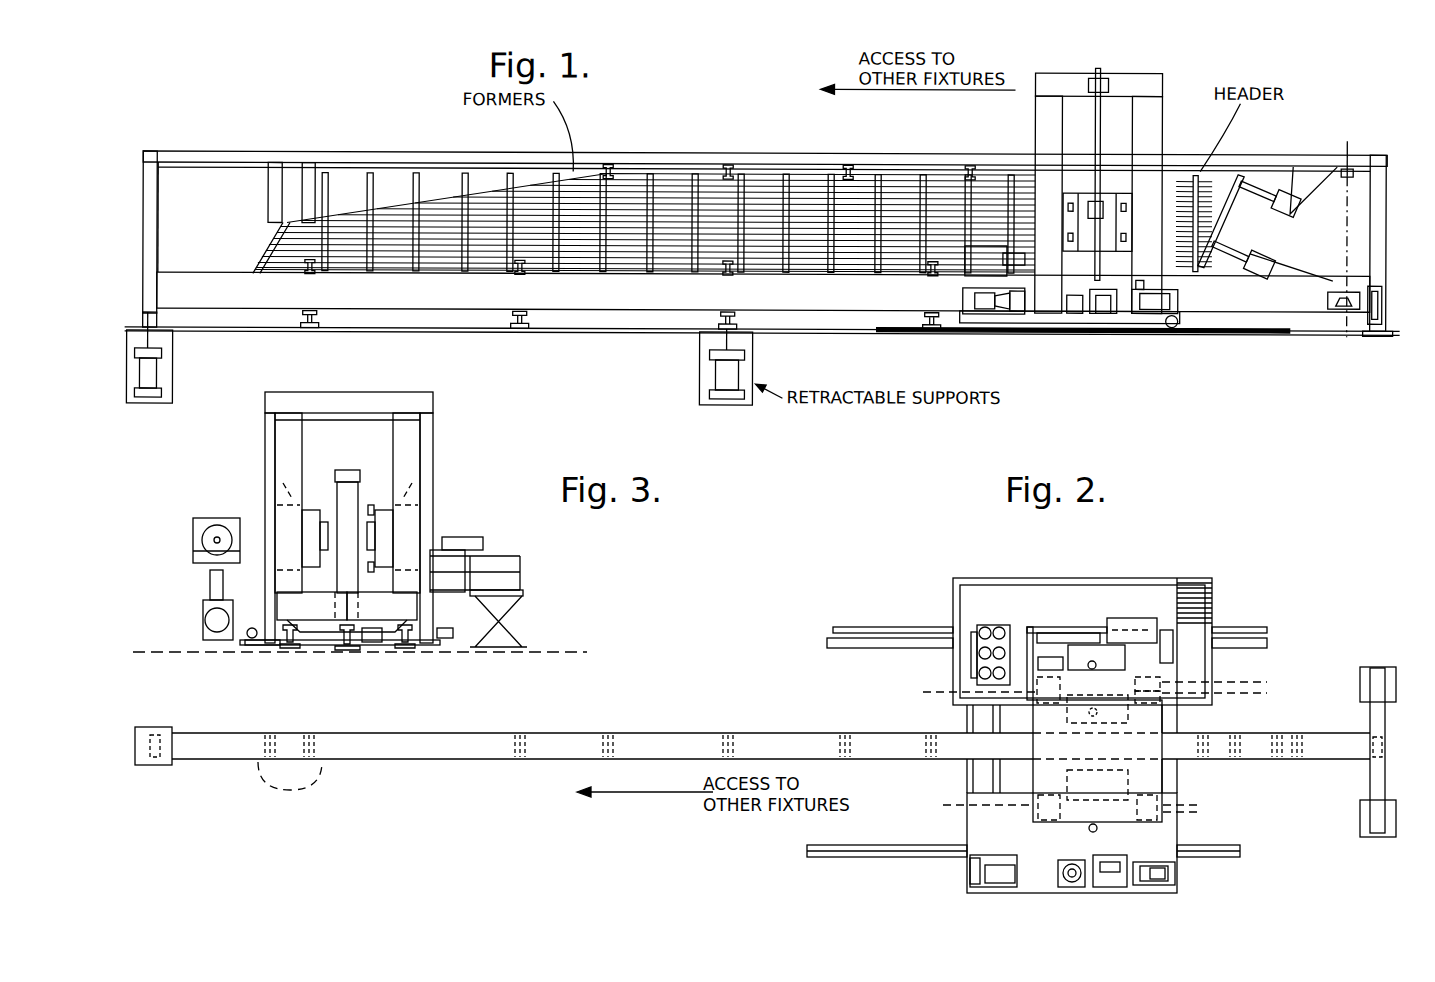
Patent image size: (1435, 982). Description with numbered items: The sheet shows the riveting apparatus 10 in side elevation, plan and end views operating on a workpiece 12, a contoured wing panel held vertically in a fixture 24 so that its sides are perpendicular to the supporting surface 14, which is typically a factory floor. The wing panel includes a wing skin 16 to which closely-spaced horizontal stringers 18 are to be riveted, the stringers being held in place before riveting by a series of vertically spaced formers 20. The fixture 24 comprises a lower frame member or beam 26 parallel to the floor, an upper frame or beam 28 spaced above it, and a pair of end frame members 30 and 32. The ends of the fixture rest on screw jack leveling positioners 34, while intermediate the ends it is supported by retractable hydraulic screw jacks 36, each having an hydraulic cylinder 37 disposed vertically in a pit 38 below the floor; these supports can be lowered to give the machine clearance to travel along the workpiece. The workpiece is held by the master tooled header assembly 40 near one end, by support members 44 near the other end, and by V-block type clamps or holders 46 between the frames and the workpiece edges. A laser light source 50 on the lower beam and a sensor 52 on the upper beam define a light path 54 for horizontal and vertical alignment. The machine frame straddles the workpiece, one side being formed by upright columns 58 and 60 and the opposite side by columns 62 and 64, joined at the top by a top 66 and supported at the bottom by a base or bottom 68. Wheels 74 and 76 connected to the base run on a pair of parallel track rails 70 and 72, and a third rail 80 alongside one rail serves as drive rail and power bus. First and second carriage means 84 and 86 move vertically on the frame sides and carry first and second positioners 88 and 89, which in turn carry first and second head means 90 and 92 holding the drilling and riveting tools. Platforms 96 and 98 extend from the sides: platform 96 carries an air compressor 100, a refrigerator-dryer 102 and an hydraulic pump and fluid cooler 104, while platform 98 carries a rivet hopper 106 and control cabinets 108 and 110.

In FIG. 1, the riveting apparatus 10 is at (1180, 85).
In FIG. 1, the workpiece 12 is at (430, 180).
In FIG. 1, the supporting surface 14 is at (246, 332).
In FIG. 3, the supporting surface 14 is at (159, 641).
In FIG. 1, the wing skin 16 is at (602, 172).
In FIG. 1, the stringers 18 is at (678, 178).
In FIG. 1, the formers 20 is at (464, 172).
In FIG. 1, the fixture 24 is at (773, 218).
In FIG. 2, the fixture 24 is at (655, 722).
In FIG. 1, the lower frame member or beam 26 is at (375, 295).
In FIG. 1, the upper frame or beam 28 is at (362, 150).
In FIG. 1, the end frame member 30 is at (147, 150).
In FIG. 1, the end frame member 32 is at (1385, 152).
In FIG. 2, the end frame member 32 is at (1370, 712).
In FIG. 1, the screw jack leveling positioners 34 is at (160, 312).
In FIG. 3, the screw jack leveling positioners 34 is at (292, 650).
In FIG. 2, the screw jack leveling positioners 34 is at (160, 727).
In FIG. 1, the hydraulic screw jacks 36 is at (305, 320).
In FIG. 3, the hydraulic screw jacks 36 is at (345, 652).
In FIG. 1, the hydraulic cylinder 37 is at (160, 370).
In FIG. 1, the pit 38 is at (165, 395).
In FIG. 1, the master tooled header assembly 40 is at (1264, 202).
In FIG. 2, the master tooled header assembly 40 is at (1240, 762).
In FIG. 1, the support members 44 is at (255, 240).
In FIG. 2, the support members 44 is at (290, 766).
In FIG. 1, the V-block type clamps or holders 46 is at (612, 165).
In FIG. 2, the V-block type clamps or holders 46 is at (520, 762).
In FIG. 1, the laser light source 50 is at (1336, 306).
In FIG. 1, the sensor 52 is at (1349, 138).
In FIG. 1, the light path 54 is at (1338, 222).
In FIG. 1, the column 58 is at (1035, 120).
In FIG. 2, the column 58 is at (986, 806).
In FIG. 1, the column 60 is at (1162, 120).
In FIG. 3, the column 60 is at (275, 445).
In FIG. 2, the column 60 is at (1182, 806).
In FIG. 2, the column 62 is at (977, 690).
In FIG. 3, the column 64 is at (420, 445).
In FIG. 2, the column 64 is at (1201, 693).
In FIG. 1, the top 66 is at (1150, 72).
In FIG. 3, the top 66 is at (355, 392).
In FIG. 2, the top 66 is at (1033, 745).
In FIG. 1, the base or bottom 68 is at (1098, 312).
In FIG. 3, the base or bottom 68 is at (372, 645).
In FIG. 1, the track rail 70 is at (1105, 334).
In FIG. 2, the track rail 70 is at (850, 857).
In FIG. 2, the track rail 72 is at (865, 648).
In FIG. 1, the wheel 74 is at (1025, 320).
In FIG. 1, the wheel 76 is at (1172, 325).
In FIG. 2, the third rail 80 is at (862, 627).
In FIG. 1, the first carriage means 84 is at (1132, 232).
In FIG. 3, the first carriage means 84 is at (275, 485).
In FIG. 2, the first carriage means 84 is at (1195, 824).
In FIG. 3, the second carriage means 86 is at (420, 485).
In FIG. 2, the second carriage means 86 is at (1201, 678).
In FIG. 3, the first positioner 88 is at (312, 612).
In FIG. 2, the first positioner 88 is at (1130, 775).
In FIG. 3, the second positioner 89 is at (382, 612).
In FIG. 2, the second positioner 89 is at (1130, 717).
In FIG. 3, the first block means or head means 90 is at (325, 510).
In FIG. 3, the second block means or head means 92 is at (360, 482).
In FIG. 3, the platform 96 is at (262, 646).
In FIG. 2, the platform 96 is at (967, 820).
In FIG. 3, the platform 98 is at (525, 592).
In FIG. 2, the platform 98 is at (1045, 580).
In FIG. 1, the air compressor 100 is at (1180, 296).
In FIG. 3, the air compressor 100 is at (208, 600).
In FIG. 2, the air compressor 100 is at (1157, 862).
In FIG. 1, the refrigerator-dryer 102 is at (1080, 312).
In FIG. 2, the refrigerator-dryer 102 is at (1100, 856).
In FIG. 1, the hydraulic pump and fluid cooler 104 is at (990, 312).
In FIG. 3, the hydraulic pump and fluid cooler 104 is at (200, 520).
In FIG. 2, the hydraulic pump and fluid cooler 104 is at (1012, 848).
In FIG. 2, the hopper 106 is at (993, 625).
In FIG. 2, the cabinet 108 is at (1080, 633).
In FIG. 3, the cabinet 110 is at (470, 537).
In FIG. 2, the cabinet 110 is at (1130, 618).